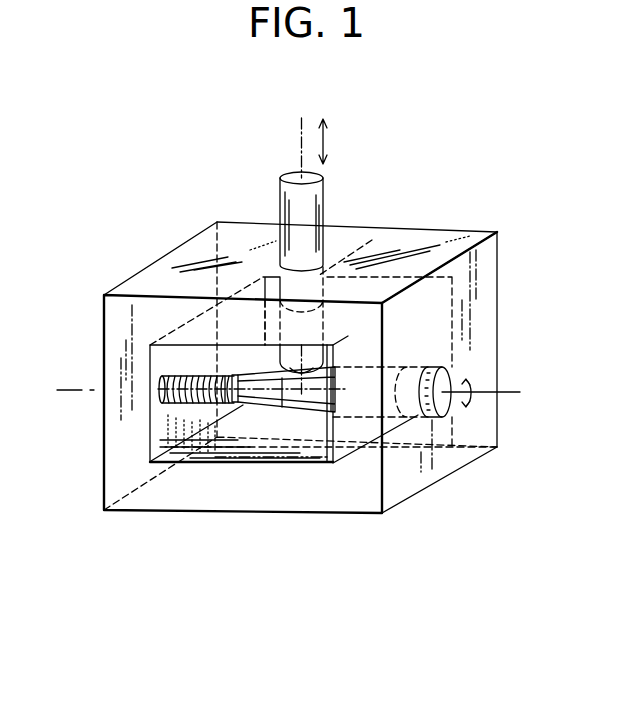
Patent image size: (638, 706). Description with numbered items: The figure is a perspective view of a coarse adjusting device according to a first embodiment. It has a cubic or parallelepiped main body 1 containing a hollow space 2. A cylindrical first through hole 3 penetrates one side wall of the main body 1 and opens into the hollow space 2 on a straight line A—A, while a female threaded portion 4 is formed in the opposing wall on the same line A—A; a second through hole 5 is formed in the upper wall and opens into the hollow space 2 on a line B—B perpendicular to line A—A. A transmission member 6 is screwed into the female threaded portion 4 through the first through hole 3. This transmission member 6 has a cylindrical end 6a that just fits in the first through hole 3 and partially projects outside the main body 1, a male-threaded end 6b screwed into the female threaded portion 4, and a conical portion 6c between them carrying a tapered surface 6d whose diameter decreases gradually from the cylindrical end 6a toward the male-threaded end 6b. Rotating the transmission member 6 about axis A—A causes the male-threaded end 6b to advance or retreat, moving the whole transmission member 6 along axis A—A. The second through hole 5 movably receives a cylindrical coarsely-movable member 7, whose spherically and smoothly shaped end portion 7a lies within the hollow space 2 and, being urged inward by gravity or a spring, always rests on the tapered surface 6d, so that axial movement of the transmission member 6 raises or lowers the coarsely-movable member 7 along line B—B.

The main body 1 is at (483, 279).
The hollow space 2 is at (177, 411).
The first through hole 3 is at (430, 420).
The female threaded portion 4 is at (162, 462).
The second through hole 5 is at (372, 240).
The transmission member 6 is at (263, 417).
The cylindrical end 6a is at (445, 418).
The male-threaded end 6b is at (222, 402).
The conical portion 6c is at (331, 386).
The tapered surface 6d is at (282, 400).
The coarsely-movable member 7 is at (313, 206).
The end portion 7a is at (302, 398).